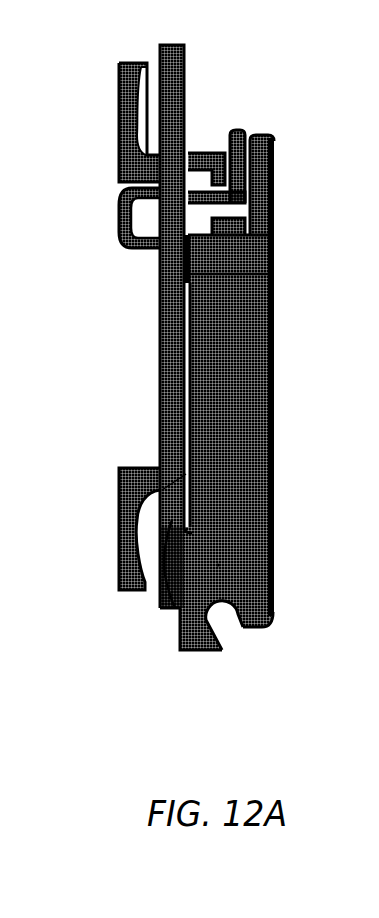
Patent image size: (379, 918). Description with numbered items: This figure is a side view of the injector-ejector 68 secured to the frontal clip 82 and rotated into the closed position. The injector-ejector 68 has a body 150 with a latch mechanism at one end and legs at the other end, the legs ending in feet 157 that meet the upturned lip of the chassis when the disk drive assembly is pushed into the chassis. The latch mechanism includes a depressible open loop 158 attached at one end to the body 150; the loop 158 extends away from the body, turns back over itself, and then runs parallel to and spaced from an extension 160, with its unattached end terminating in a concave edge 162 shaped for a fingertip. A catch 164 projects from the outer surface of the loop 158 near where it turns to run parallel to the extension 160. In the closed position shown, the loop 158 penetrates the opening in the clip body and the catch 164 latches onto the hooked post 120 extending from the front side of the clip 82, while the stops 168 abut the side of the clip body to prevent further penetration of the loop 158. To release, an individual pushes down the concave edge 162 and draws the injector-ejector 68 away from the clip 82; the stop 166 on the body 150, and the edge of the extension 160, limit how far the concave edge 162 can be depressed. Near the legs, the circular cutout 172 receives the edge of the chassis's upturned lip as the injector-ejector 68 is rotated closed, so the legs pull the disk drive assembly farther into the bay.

The injector-ejector 68 is at (274, 355).
The clip 82 is at (160, 452).
The hooked post 120 is at (195, 155).
The body 150 is at (231, 410).
The feet 157 is at (197, 660).
The depressible open loop 158 is at (131, 225).
The extension 160 is at (275, 153).
The concave edge 162 is at (242, 131).
The catch 164 is at (188, 182).
The stop 166 is at (271, 233).
The stops 168 is at (272, 276).
The circular cutout 172 is at (224, 628).